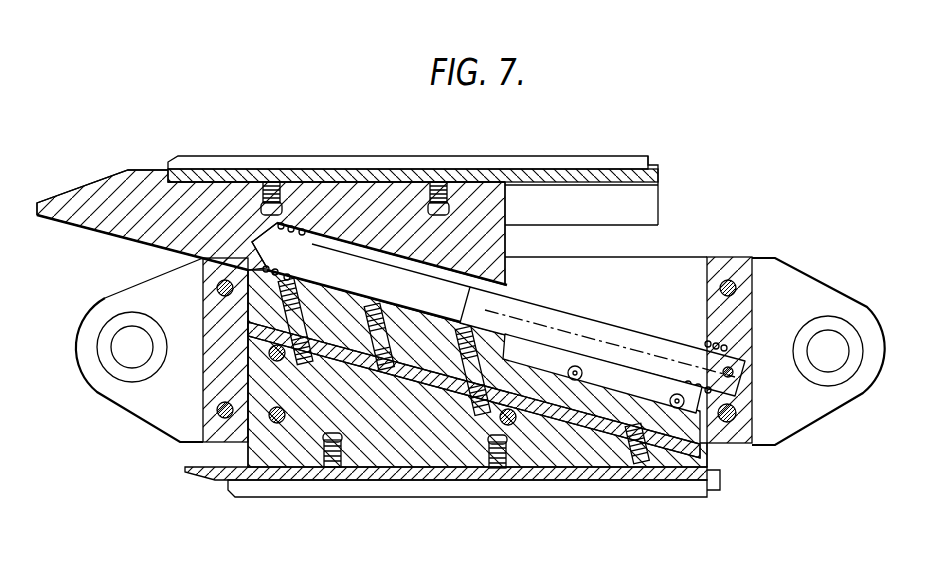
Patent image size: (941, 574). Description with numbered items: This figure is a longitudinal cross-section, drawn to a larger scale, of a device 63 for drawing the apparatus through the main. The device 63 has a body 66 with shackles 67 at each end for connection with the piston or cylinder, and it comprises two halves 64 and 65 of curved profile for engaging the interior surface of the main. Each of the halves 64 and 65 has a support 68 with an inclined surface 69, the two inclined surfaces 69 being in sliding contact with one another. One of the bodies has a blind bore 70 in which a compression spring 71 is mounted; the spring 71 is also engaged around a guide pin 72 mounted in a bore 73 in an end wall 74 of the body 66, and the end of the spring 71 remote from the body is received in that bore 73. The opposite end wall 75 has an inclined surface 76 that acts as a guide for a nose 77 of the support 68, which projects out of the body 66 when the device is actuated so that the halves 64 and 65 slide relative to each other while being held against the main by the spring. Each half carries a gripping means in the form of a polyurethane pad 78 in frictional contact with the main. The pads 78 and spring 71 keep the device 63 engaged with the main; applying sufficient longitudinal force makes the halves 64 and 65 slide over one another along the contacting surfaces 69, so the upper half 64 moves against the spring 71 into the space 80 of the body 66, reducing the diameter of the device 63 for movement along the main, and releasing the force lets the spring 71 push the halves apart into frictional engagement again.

The device for drawing the apparatus through the main 63 is at (403, 148).
The upper half 64 is at (324, 193).
The lower half 65 is at (453, 458).
The body 66 is at (691, 251).
The shackles 67 is at (103, 388).
The support 68 is at (482, 233).
The inclined surface 69 is at (519, 372).
The blind bore 70 is at (382, 287).
The compression spring 71 is at (570, 303).
The guide pin 72 is at (615, 335).
The bore 73 is at (742, 393).
The end wall 74 is at (725, 310).
The end wall 75 is at (213, 387).
The inclined surface 76 is at (205, 278).
The nose 77 is at (142, 203).
The polyurethane pad 78 is at (200, 162).
The space 80 is at (620, 228).